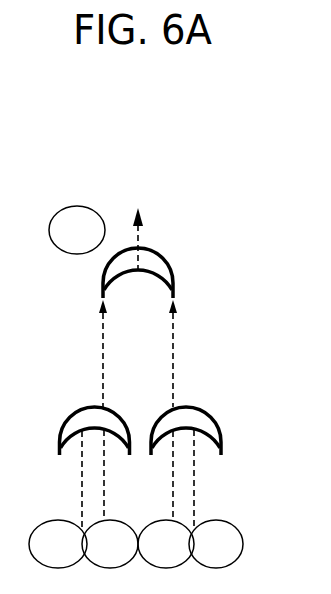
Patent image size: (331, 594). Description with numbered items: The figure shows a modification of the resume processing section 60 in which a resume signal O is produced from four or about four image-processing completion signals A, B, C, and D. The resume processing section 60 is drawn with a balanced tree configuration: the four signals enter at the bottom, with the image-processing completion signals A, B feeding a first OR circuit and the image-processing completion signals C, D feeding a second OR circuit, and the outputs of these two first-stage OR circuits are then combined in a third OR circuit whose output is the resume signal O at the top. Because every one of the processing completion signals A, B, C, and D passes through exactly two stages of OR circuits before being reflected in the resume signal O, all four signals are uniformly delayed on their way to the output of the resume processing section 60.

The resume processing section 60 is at (233, 196).
The resume signal O is at (77, 230).
The image-processing completion signal A is at (58, 544).
The image-processing completion signal B is at (110, 544).
The image-processing completion signal C is at (166, 544).
The image-processing completion signal D is at (216, 544).